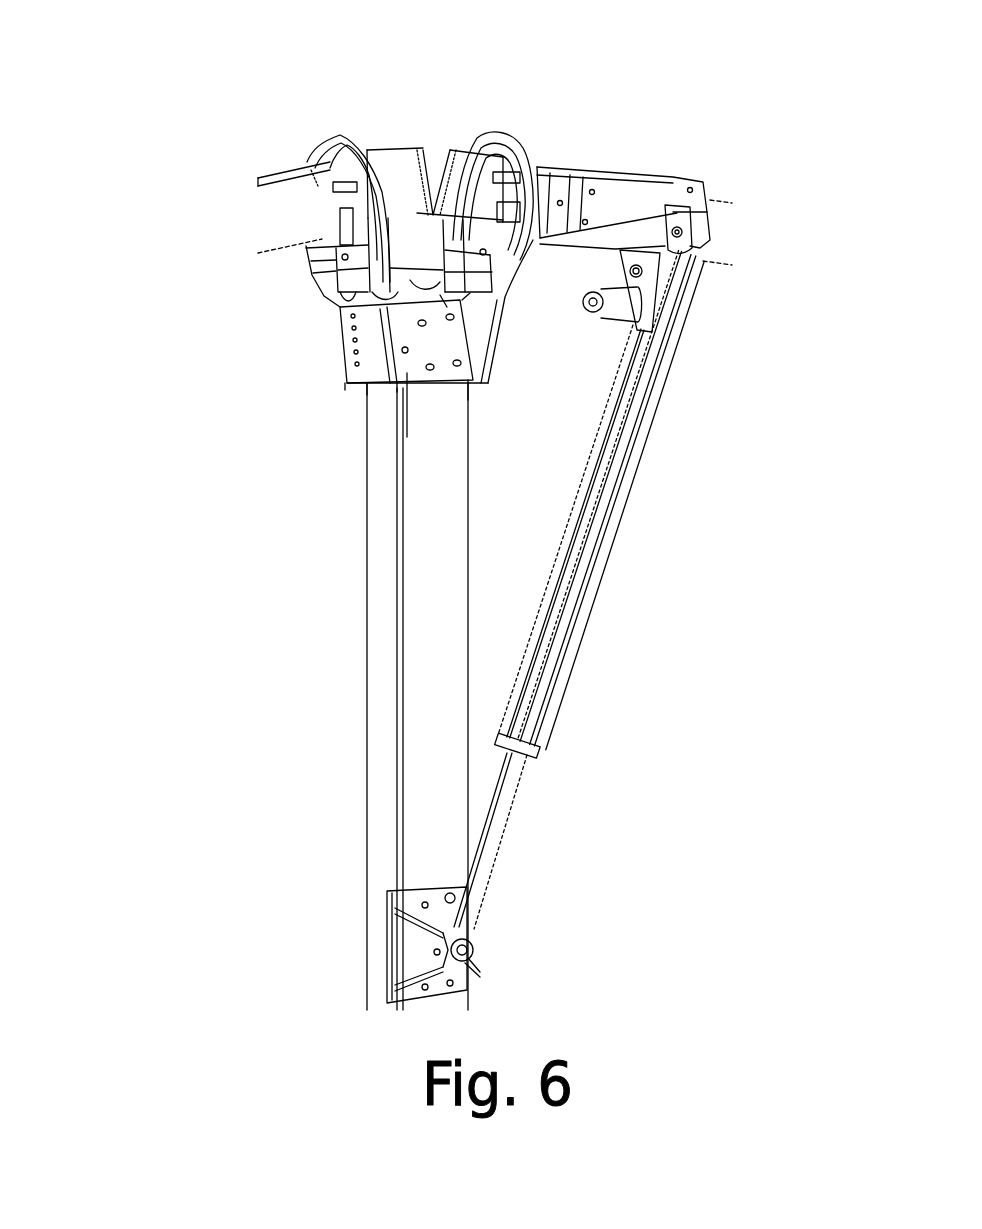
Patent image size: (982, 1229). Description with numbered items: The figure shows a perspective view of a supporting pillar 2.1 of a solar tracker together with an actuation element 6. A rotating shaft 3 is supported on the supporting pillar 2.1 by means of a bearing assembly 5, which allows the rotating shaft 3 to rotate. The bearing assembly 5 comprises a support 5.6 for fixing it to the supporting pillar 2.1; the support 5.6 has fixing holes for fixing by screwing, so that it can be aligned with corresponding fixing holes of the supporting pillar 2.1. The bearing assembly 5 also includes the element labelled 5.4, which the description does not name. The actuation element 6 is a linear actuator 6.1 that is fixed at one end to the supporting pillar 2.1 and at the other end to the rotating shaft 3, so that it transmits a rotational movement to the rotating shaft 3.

The supporting pillar 2.1 is at (430, 688).
The rotating shaft 3 is at (407, 203).
The bearing assembly 5 is at (425, 270).
The hooks 5.4 is at (490, 140).
The support 5.6 is at (478, 333).
The actuation element 6 is at (587, 632).
The linear actuator 6.1 is at (556, 613).